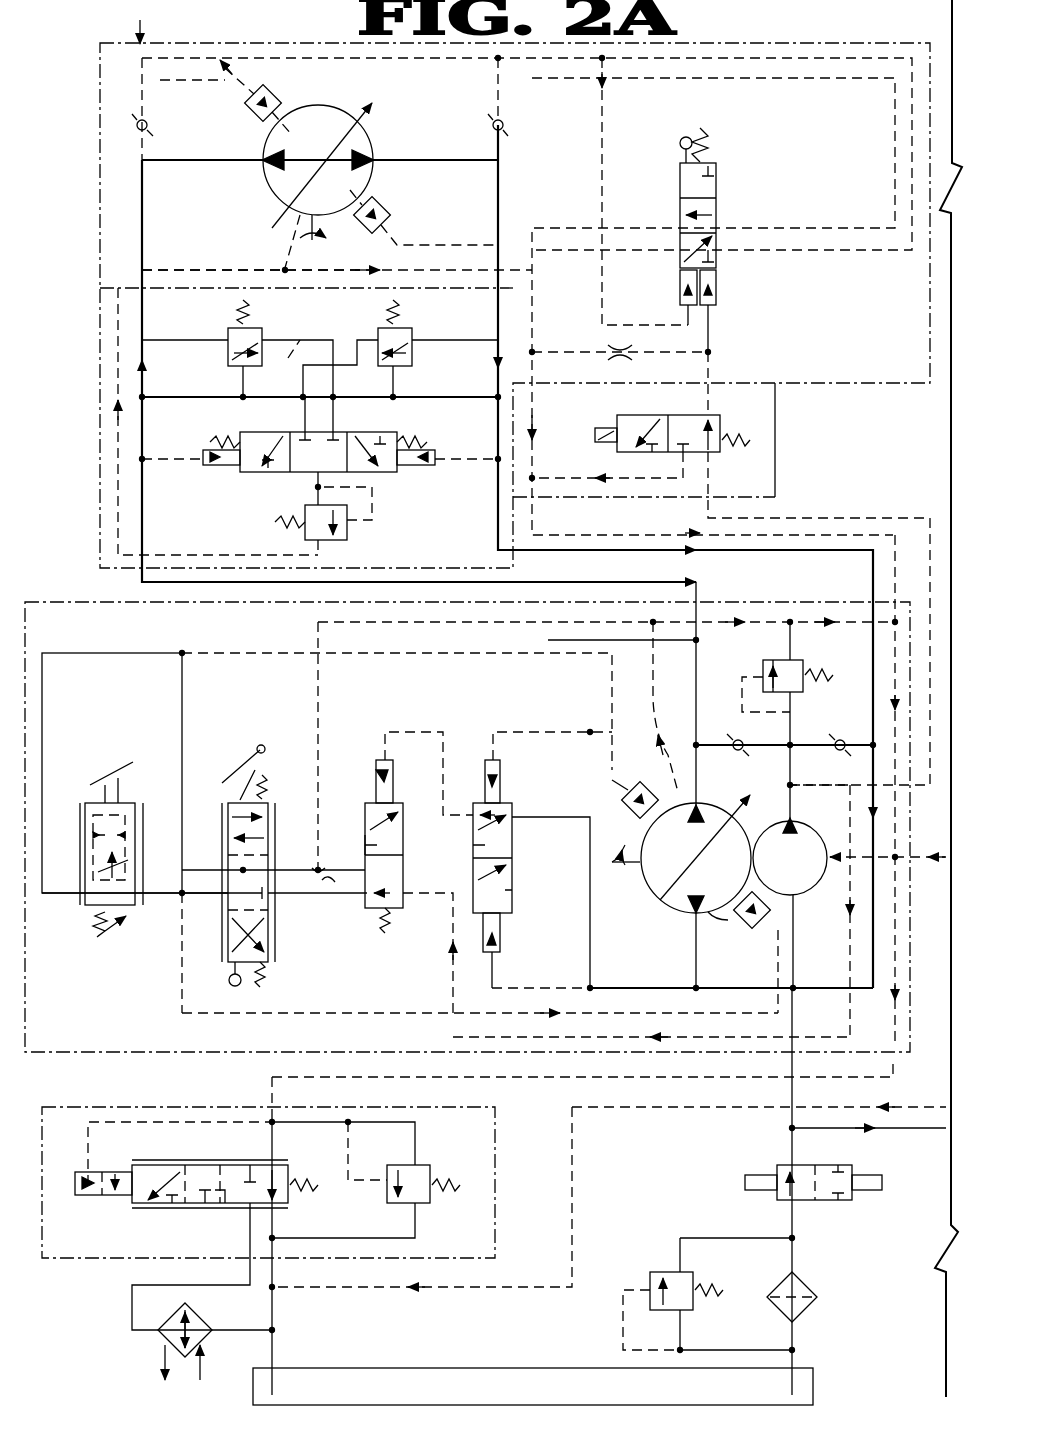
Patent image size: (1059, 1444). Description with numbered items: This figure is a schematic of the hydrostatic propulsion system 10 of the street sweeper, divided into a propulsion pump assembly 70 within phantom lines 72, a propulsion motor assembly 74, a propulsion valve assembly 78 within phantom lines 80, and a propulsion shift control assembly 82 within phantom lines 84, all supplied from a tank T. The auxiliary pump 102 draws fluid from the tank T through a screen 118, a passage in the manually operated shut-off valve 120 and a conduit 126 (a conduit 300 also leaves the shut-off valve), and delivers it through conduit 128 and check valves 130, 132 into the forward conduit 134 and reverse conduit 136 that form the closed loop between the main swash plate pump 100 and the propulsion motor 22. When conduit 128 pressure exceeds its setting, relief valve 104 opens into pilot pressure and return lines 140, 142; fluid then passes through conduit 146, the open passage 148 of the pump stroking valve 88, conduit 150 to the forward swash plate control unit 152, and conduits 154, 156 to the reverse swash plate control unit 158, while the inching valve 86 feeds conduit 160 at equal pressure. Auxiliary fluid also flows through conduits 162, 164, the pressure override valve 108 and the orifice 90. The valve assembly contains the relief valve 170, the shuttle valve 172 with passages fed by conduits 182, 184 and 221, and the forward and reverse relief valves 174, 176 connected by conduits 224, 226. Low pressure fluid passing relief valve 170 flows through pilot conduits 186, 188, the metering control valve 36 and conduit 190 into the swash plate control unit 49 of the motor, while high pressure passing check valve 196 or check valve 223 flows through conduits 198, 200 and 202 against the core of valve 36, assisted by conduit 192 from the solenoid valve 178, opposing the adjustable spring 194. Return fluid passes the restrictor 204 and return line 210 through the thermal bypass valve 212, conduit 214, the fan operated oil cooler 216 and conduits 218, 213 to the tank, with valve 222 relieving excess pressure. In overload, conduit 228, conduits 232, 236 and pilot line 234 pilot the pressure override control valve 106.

The hydrostatic propulsion system 10 is at (98, 46).
The propulsion motor assembly 74 is at (136, 22).
The conduit 200 is at (282, 57).
The conduit 198 is at (191, 79).
The check valve 196 is at (147, 132).
The swash plate control unit 49 is at (348, 164).
The hydrostatic propulsion motor 22 is at (372, 145).
The check valve 223 is at (494, 122).
The forward conduit 134 is at (142, 184).
The reverse conduit 136 is at (498, 184).
The phantom lines 80 is at (105, 275).
The pilot conduit 186 is at (210, 270).
The propulsion valve assembly 78 is at (115, 340).
The conduit 224 is at (160, 340).
The forward relief valve 174 is at (228, 352).
The conduit 226 is at (313, 369).
The reverse relief valve 176 is at (412, 360).
The conduit 221 is at (215, 400).
The conduit 182 is at (472, 400).
The conduit 184 is at (318, 487).
The shuttle valve 172 is at (392, 474).
The relief valve 170 is at (347, 528).
The phantom lines 72 is at (38, 602).
The propulsion pump assembly 70 is at (112, 600).
The adjustable spring 194 is at (715, 130).
The automatic metering speed control valve 36 is at (680, 186).
The conduit 190 is at (628, 250).
The pilot conduit 188 is at (532, 178).
The conduit 202 is at (608, 325).
The restrictor 204 is at (612, 348).
The conduit 192 is at (708, 328).
The return line 210 is at (535, 400).
The phantom lines 84 is at (778, 410).
The propulsion shift control assembly 82 is at (770, 452).
The solenoid operated motor control valve 178 is at (618, 448).
The conduit 162 is at (706, 512).
The return line 142 is at (825, 612).
The conduit 160 is at (105, 645).
The conduit 156 is at (218, 654).
The pilot pressure line 140 is at (318, 630).
The conduit 154 is at (182, 676).
The inching valve 86 is at (125, 800).
The pump stroking valve 88 is at (228, 800).
The conduit 146 is at (292, 868).
The open passage 148 is at (238, 880).
The conduit 150 is at (170, 895).
The orifice 90 is at (328, 902).
The pressure override valve 108 is at (403, 846).
The conduit 228 is at (592, 636).
The pressure override control valve 106 is at (512, 810).
The reverse swash plate control unit 158 is at (627, 800).
The pilot operated relief valve 104 is at (792, 662).
The check valve 132 is at (845, 728).
The check valve 130 is at (752, 756).
The conduit 128 is at (790, 802).
The main positive displacement swash plate pump 100 is at (757, 880).
The auxiliary pump 102 is at (799, 903).
The conduit 236 is at (546, 870).
The pilot line 234 is at (512, 990).
The conduit 232 is at (612, 990).
The forward swash plate control unit 152 is at (740, 952).
The conduit 164 is at (453, 980).
The thermal bypass valve 212 is at (178, 1165).
The pilot operated valve 222 is at (418, 1165).
The conduit 214 is at (132, 1292).
The conduit 218 is at (250, 1330).
The fan operated oil cooler 216 is at (160, 1335).
The conduit 213 is at (274, 1348).
The conduit 126 is at (790, 1147).
The conduit 300 is at (935, 1132).
The manually operated shut-off valve 120 is at (818, 1202).
The screen 118 is at (802, 1290).
The tank T is at (462, 1380).